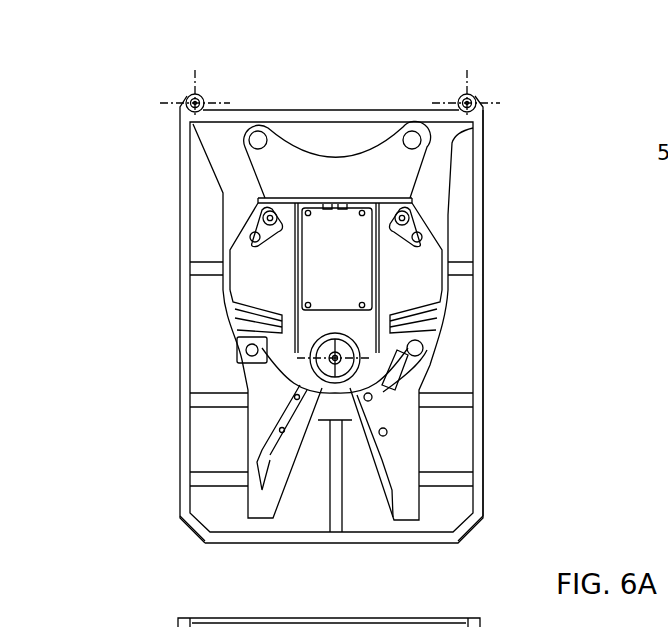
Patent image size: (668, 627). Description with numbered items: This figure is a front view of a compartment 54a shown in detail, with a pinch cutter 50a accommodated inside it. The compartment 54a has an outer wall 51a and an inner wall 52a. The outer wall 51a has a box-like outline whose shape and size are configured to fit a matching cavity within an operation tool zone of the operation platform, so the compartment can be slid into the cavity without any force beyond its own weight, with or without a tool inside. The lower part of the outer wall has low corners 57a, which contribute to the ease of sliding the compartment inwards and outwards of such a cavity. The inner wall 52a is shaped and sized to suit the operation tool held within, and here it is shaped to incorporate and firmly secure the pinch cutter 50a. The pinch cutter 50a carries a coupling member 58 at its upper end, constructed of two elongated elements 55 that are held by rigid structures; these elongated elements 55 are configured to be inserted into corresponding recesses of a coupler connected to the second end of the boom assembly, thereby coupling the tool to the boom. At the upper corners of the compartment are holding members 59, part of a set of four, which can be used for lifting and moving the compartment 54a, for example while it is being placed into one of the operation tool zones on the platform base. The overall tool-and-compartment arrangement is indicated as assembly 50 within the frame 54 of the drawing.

The mounting assembly 50 is at (298, 100).
The pinch cutter 50a is at (412, 267).
The outer wall 51a is at (484, 228).
The inner wall 52a is at (452, 178).
The frame 54 is at (303, 328).
The compartment 54a is at (463, 305).
The elongated elements 55 is at (411, 130).
The low corners 57a is at (190, 530).
The coupling member 58 is at (349, 132).
The holding members 59 is at (186, 98).